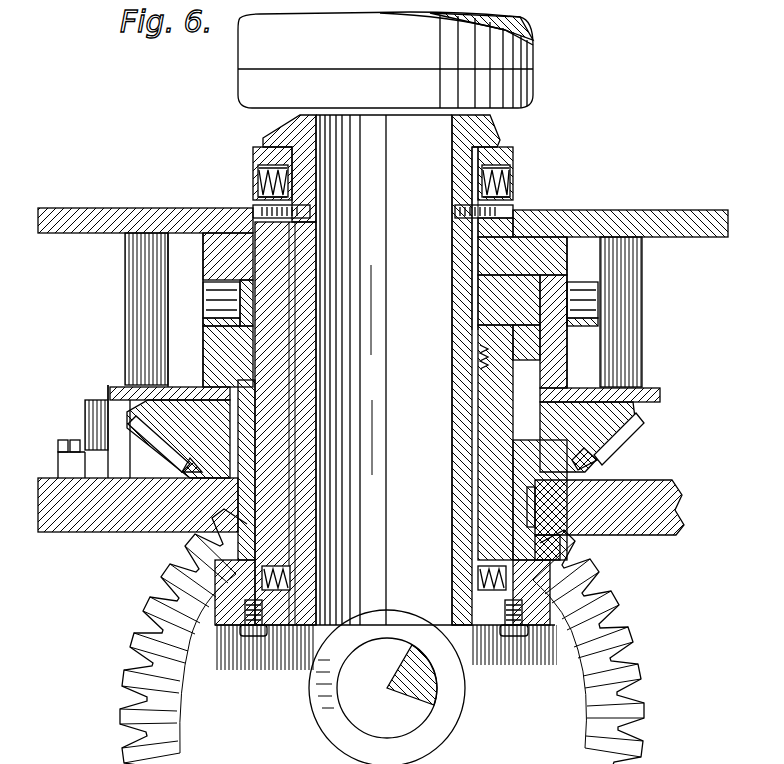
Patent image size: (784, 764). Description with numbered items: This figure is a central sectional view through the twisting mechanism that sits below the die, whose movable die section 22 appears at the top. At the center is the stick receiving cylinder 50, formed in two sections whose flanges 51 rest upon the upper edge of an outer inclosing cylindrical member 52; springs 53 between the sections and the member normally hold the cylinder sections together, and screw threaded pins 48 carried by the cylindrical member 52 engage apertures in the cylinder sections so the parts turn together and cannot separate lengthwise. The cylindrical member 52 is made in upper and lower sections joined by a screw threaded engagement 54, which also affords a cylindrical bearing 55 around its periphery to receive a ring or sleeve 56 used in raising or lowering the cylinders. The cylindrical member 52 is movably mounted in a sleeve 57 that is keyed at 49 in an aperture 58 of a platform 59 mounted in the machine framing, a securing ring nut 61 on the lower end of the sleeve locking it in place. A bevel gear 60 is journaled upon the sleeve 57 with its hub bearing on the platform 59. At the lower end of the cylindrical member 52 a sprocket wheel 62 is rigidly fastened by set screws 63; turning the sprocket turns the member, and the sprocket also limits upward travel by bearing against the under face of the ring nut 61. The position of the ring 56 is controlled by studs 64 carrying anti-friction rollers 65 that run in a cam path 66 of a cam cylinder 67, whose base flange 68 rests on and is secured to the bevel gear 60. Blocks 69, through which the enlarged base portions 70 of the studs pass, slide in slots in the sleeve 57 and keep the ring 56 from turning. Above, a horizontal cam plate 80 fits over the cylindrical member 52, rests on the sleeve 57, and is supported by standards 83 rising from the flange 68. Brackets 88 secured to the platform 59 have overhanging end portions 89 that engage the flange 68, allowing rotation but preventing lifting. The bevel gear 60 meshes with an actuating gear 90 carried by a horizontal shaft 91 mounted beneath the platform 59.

The movable die section 22 is at (527, 62).
The screw threaded pins 48 is at (456, 212).
The key 49 is at (535, 502).
The stick receiving cylinder 50 is at (377, 370).
The flanges 51 is at (497, 140).
The outer inclosing cylindrical member 52 is at (527, 228).
The springs 53 is at (510, 178).
The screw threaded engagement 54 is at (488, 362).
The cylindrical bearing 55 is at (255, 210).
The ring or sleeve 56 is at (250, 298).
The sleeve 57 is at (545, 470).
The aperture 58 is at (237, 505).
The platform 59 is at (88, 515).
The bevel gear 60 is at (615, 436).
The securing ring nut 61 is at (547, 545).
The sprocket wheel 62 is at (547, 635).
The set screws 63 is at (512, 637).
The studs 64 is at (548, 296).
The anti-friction rollers 65 is at (613, 265).
The cam path 66 is at (545, 330).
The cam cylinder 67 is at (560, 352).
The base flange 68 is at (660, 395).
The blocks 69 is at (558, 247).
The enlarged base portions 70 is at (527, 304).
The cam plate 80 is at (82, 216).
The standards 83 is at (632, 270).
The brackets 88 is at (100, 412).
The overhanging end portions 89 is at (115, 372).
The actuating gear 90 is at (382, 636).
The horizontal shaft 91 is at (387, 687).